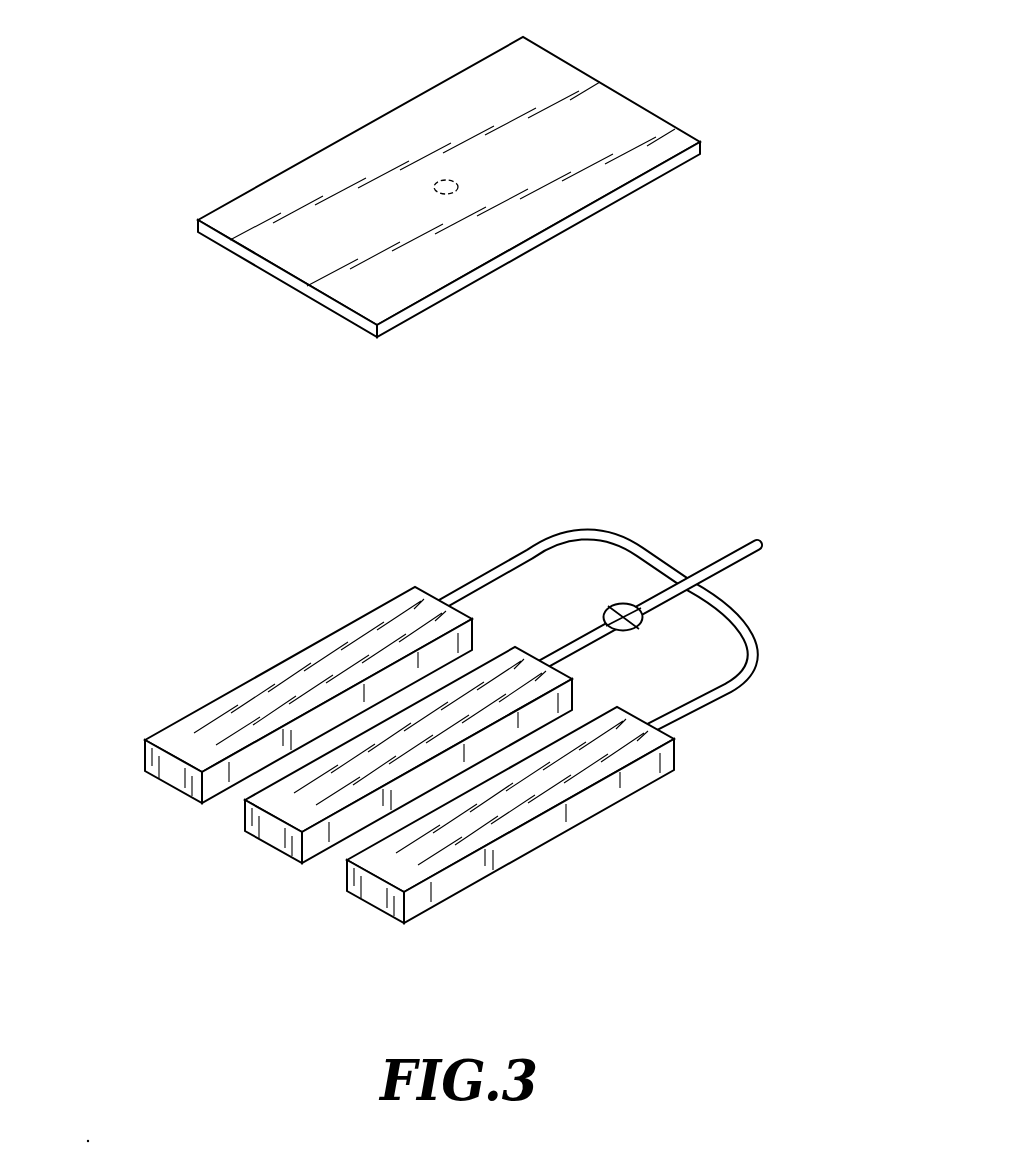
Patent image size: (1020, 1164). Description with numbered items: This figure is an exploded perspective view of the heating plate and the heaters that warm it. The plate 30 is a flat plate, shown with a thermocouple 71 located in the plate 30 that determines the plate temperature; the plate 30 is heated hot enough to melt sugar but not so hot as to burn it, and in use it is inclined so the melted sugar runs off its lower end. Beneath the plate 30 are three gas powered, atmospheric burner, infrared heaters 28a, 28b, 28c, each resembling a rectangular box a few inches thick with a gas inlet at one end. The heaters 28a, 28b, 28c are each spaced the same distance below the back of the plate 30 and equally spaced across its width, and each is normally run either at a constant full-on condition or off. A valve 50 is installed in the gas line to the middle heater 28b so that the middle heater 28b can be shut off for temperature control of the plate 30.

The plate 30 is at (538, 213).
The thermocouple 71 is at (444, 178).
The valve 50 is at (641, 627).
The heater 28a is at (575, 817).
The middle heater 28b is at (270, 843).
The heater 28c is at (173, 757).